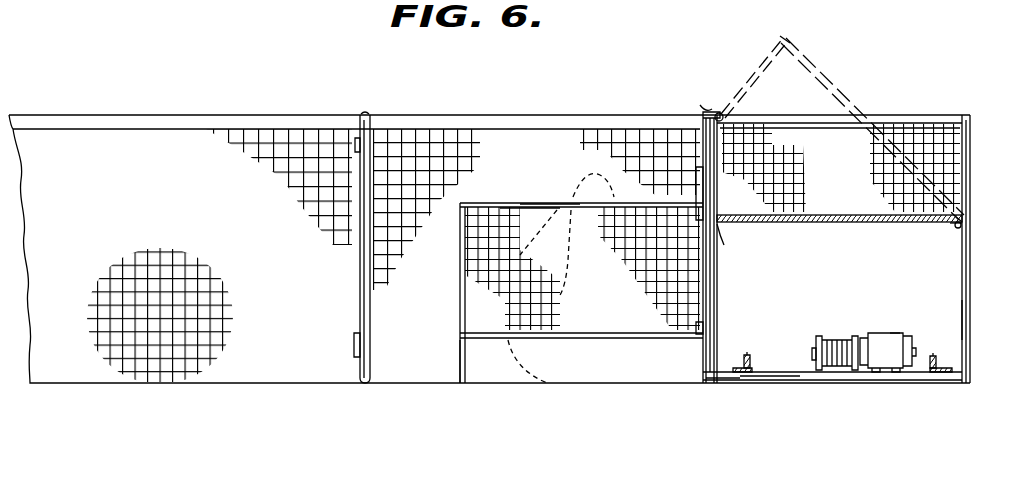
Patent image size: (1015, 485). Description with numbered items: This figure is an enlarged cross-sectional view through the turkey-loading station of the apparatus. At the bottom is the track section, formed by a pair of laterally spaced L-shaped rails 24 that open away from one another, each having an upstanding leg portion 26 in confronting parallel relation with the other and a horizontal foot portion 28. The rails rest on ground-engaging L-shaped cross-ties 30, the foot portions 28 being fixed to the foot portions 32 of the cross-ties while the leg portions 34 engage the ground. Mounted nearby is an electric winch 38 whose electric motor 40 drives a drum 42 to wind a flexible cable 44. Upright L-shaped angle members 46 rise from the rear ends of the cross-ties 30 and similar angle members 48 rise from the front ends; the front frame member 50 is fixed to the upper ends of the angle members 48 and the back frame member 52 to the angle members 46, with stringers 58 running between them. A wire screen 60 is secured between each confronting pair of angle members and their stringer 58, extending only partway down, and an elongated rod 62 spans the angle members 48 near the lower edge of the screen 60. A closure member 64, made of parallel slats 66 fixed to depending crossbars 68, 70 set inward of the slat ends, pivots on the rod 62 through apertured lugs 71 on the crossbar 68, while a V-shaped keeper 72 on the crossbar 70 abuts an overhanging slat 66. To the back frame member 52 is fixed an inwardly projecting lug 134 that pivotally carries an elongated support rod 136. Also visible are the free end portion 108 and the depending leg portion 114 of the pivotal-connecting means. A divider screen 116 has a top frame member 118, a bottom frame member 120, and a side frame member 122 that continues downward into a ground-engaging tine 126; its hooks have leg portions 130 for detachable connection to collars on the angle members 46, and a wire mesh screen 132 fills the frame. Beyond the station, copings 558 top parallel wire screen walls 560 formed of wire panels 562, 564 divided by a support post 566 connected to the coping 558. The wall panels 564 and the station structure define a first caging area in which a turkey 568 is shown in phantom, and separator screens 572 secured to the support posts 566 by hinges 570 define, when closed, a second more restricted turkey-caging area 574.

The L-shaped rail 24 is at (762, 350).
The upstanding leg portion 26 is at (752, 362).
The horizontal foot portion 28 is at (740, 367).
The ground-engaging L-shaped cross-tie 30 is at (786, 382).
The foot portion of cross-tie 32 is at (770, 380).
The leg portion of cross-tie 34 is at (745, 380).
The electric winch 38 is at (892, 326).
The electric motor 40 is at (904, 332).
The drum 42 is at (818, 345).
The flexible cable 44 is at (848, 339).
The upright L-shaped angle member 46 is at (714, 341).
The L-shaped angle member 48 is at (970, 324).
The front frame member 50 is at (970, 117).
The back frame member 52 is at (700, 112).
The stringer 58 is at (902, 116).
The wire screen 60 is at (841, 168).
The elongated rod 62 is at (965, 226).
The closure member 64 is at (838, 96).
The slat 66 is at (918, 214).
The crossbar 68 is at (956, 229).
The crossbar 70 is at (783, 52).
The apertured lug 71 is at (968, 220).
The V-shaped keeper 72 is at (718, 236).
The free end portion 108 is at (649, 268).
The depending leg portion 114 is at (700, 335).
The divider screen 116 is at (528, 203).
The top frame member 118 is at (544, 203).
The bottom frame member 120 is at (632, 336).
The side frame member 122 is at (460, 279).
The ground-engaging tine 126 is at (460, 360).
The leg portion of hook 130 is at (696, 362).
The wire mesh screen 132 is at (554, 333).
The inwardly-projecting lug 134 is at (716, 113).
The elongated support rod 136 is at (760, 77).
The coping 558 is at (425, 117).
The wire screen wall 560 is at (284, 135).
The wire panel 562 is at (470, 127).
The wire panel 564 is at (283, 140).
The support post 566 is at (355, 135).
The turkey 568 is at (574, 190).
The hinge 570 is at (353, 348).
The separator screen 572 is at (358, 252).
The second turkey-caging area 574 is at (368, 108).